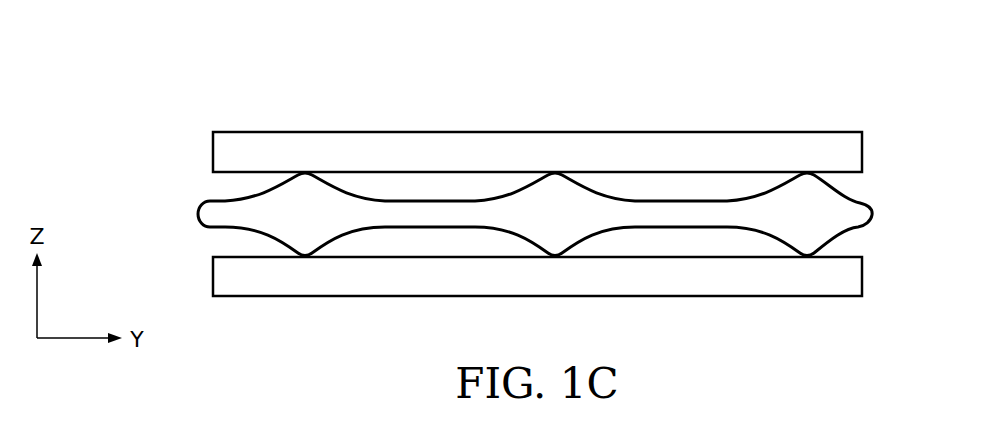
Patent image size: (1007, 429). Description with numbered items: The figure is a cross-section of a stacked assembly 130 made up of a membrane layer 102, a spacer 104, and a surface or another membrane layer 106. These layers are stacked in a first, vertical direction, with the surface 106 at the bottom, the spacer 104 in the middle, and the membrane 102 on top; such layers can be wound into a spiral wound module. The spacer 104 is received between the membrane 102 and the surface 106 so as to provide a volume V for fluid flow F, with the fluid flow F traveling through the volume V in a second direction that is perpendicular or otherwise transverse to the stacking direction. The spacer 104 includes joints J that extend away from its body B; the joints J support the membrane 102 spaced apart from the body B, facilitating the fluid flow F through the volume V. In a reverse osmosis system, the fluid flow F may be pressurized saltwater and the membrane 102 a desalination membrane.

The membrane layer 102 is at (862, 151).
The spacer 104 is at (875, 212).
The surface or another membrane layer 106 is at (862, 278).
The stacked assembly 130 is at (810, 98).
The volume V is at (424, 186).
The joints J is at (558, 163).
The body B is at (677, 191).
The fluid flow F is at (170, 214).